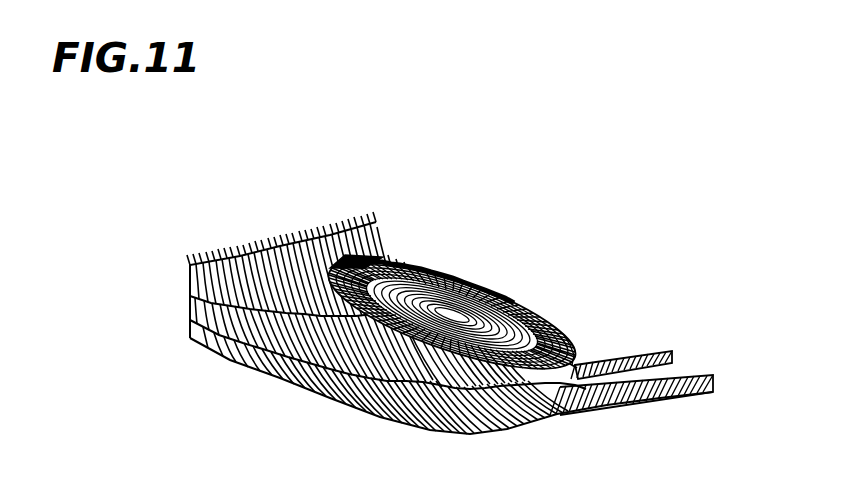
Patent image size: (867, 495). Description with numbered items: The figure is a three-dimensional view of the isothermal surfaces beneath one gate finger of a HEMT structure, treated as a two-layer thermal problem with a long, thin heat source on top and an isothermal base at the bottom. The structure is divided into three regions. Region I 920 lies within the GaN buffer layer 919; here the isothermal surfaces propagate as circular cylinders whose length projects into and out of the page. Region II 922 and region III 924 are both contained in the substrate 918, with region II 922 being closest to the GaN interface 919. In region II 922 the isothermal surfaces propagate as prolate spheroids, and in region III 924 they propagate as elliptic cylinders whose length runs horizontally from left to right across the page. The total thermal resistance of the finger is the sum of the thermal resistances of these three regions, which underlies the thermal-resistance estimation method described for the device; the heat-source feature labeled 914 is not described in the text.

The recessed pocket 914 is at (400, 265).
The substrate 918 is at (585, 191).
The GaN buffer layer 919 is at (471, 163).
The region I 920 is at (483, 289).
The region II 922 is at (570, 316).
The region III 924 is at (690, 378).